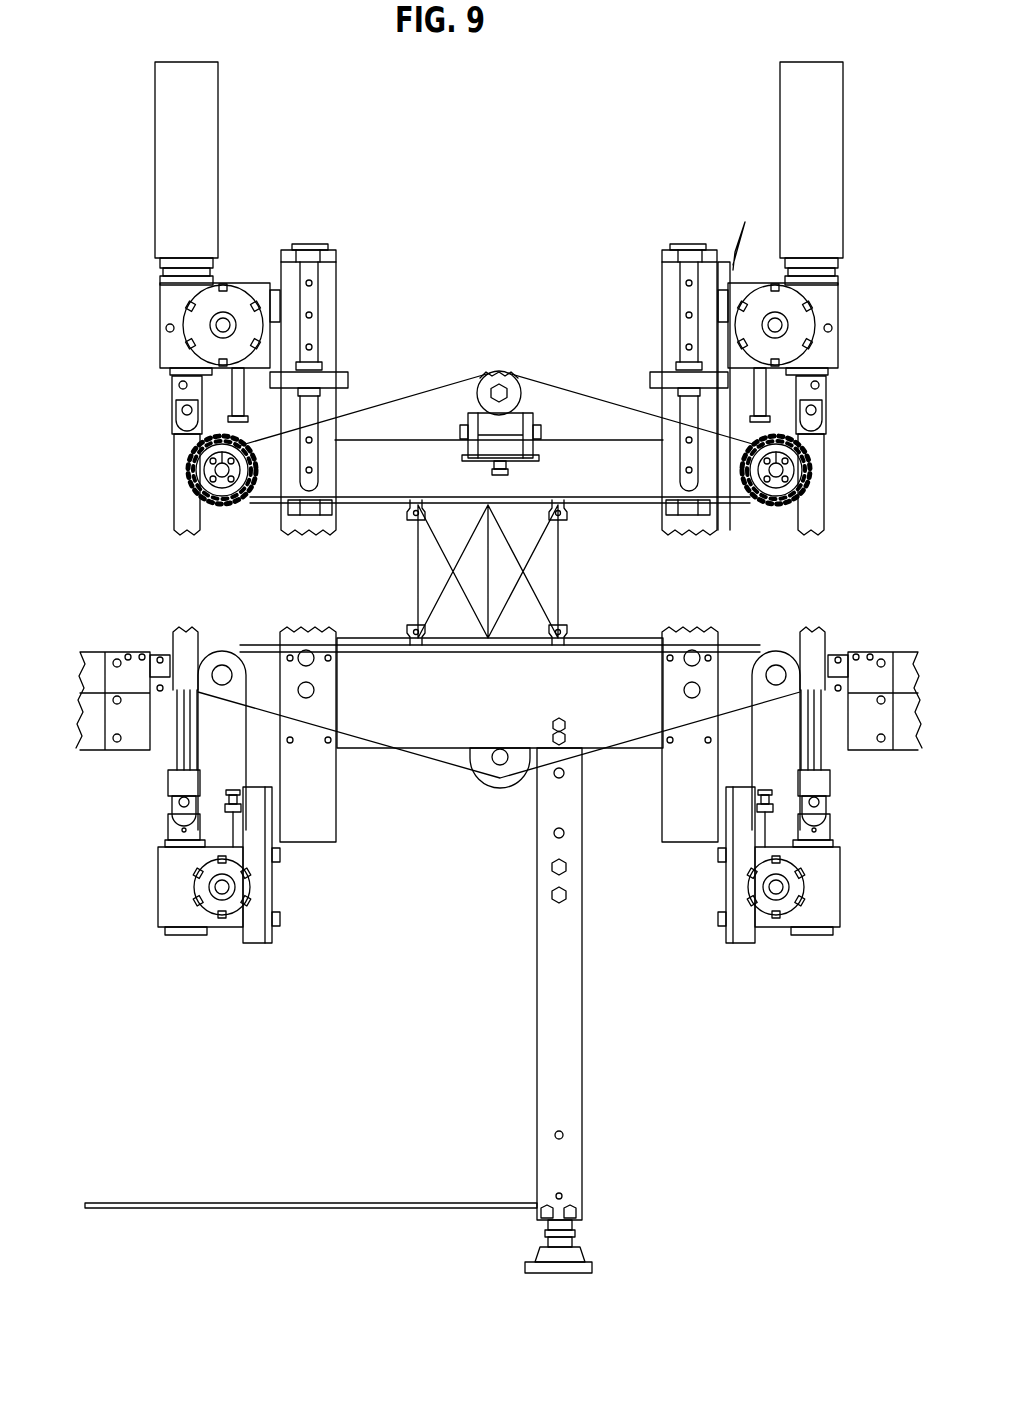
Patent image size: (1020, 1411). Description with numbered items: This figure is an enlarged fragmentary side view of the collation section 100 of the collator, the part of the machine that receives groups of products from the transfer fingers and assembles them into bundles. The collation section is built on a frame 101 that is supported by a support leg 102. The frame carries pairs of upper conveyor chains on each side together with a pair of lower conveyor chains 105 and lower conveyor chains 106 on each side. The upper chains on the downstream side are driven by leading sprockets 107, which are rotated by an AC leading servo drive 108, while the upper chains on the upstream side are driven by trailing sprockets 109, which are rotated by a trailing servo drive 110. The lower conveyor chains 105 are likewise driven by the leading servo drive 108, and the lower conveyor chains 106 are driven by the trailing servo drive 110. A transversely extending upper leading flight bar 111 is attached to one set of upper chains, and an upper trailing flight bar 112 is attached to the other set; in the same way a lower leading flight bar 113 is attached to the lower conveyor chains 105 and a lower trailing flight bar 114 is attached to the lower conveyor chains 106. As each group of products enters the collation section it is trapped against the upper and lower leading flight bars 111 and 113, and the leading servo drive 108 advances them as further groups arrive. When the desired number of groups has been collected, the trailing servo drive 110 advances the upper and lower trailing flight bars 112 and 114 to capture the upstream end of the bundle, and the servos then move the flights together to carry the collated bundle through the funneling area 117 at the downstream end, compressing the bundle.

The collation section 100 is at (152, 408).
The frame 101 is at (458, 736).
The support leg 102 is at (574, 1036).
The lower conveyor chains 105 is at (613, 632).
The lower conveyor chains 106 is at (356, 632).
The leading sprockets 107 is at (802, 476).
The leading servo drive 108 is at (790, 114).
The trailing sprockets 109 is at (200, 472).
The trailing servo drive 110 is at (222, 62).
The upper leading flight bar 111 is at (568, 493).
The upper trailing flight bar 112 is at (418, 496).
The lower leading flight bar 113 is at (568, 622).
The lower trailing flight bar 114 is at (413, 626).
The funneling area 117 is at (682, 574).